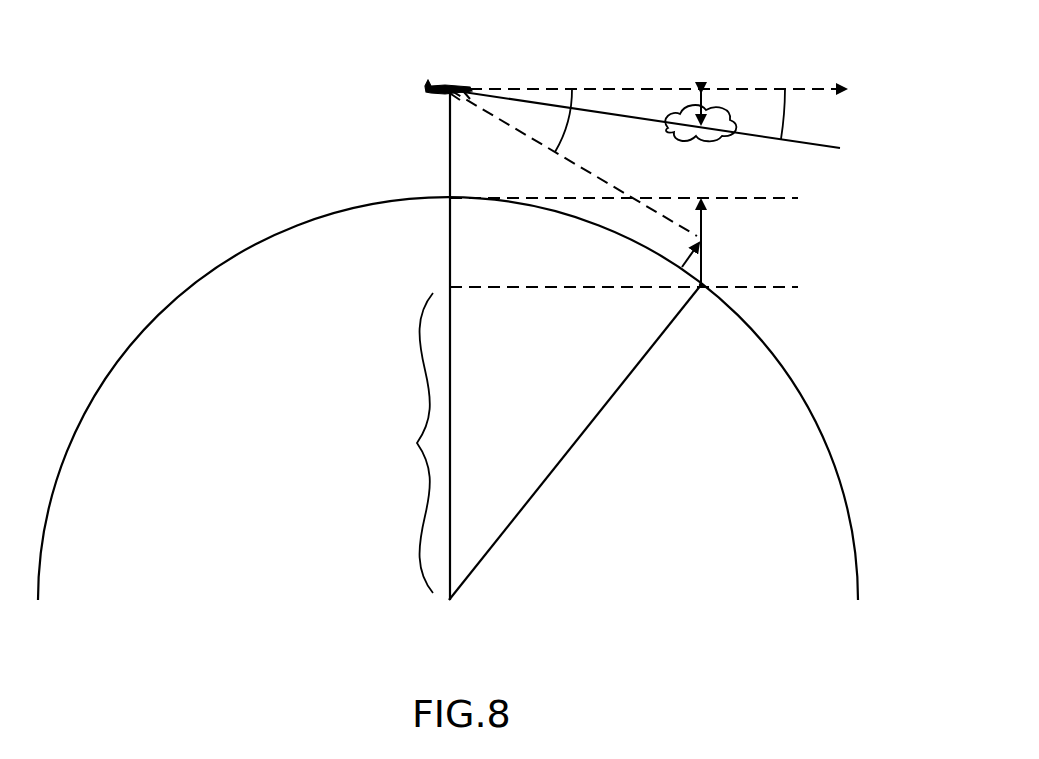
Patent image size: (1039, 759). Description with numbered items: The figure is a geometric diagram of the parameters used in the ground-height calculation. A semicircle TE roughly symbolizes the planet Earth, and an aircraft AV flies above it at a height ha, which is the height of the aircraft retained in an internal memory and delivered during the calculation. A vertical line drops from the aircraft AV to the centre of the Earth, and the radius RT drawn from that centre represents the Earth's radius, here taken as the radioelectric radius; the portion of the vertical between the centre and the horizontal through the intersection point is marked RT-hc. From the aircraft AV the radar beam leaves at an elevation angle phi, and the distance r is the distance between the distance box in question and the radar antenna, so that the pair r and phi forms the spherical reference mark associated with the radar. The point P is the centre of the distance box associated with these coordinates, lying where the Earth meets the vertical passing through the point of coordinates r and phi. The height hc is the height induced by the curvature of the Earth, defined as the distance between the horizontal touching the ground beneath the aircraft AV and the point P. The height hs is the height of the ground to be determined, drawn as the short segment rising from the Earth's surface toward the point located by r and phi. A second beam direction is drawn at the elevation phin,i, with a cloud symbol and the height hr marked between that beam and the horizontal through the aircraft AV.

The aircraft AV is at (436, 82).
The semicircle symbolizing the Earth TE is at (162, 309).
The point P is at (705, 305).
The height of the aircraft ha is at (430, 346).
The height induced by the curvature of the Earth hc is at (624, 242).
The height of radar beam above cloud hr is at (709, 116).
The height of the ground hs is at (675, 244).
The distance r is at (573, 163).
The Earth's radius RT is at (575, 442).
The Earth radius minus cloud altitude RT-hc is at (378, 443).
The elevation of the radar beam phi is at (572, 120).
The beam elevation angle phin,i is at (639, 118).